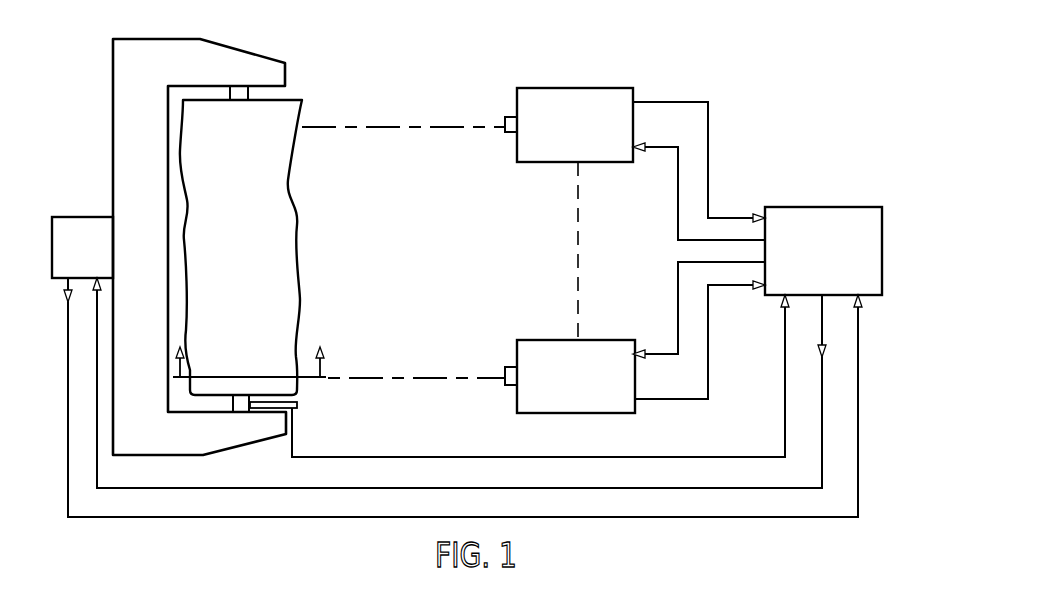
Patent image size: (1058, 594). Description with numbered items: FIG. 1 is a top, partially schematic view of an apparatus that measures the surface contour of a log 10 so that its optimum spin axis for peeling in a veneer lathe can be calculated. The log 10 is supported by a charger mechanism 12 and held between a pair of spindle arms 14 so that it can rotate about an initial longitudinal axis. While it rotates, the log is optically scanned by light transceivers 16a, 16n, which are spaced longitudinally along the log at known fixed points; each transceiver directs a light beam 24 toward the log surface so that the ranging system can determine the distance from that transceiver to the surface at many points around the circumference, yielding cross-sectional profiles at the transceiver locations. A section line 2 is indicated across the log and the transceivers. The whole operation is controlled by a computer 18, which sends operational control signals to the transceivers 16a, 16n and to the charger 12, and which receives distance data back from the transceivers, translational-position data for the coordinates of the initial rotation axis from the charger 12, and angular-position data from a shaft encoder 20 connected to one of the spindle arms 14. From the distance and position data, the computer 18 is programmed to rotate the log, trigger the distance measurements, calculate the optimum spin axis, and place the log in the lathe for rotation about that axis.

The section line 2- 2 is at (249, 376).
The log 10 is at (287, 250).
The charger mechanism 12 is at (218, 52).
The spindle arms 14 is at (250, 98).
The light transceiver 16a is at (573, 88).
The light transceiver 16n is at (590, 408).
The computer 18 is at (813, 215).
The shaft encoder 20 is at (298, 407).
The light beam 24 is at (388, 127).